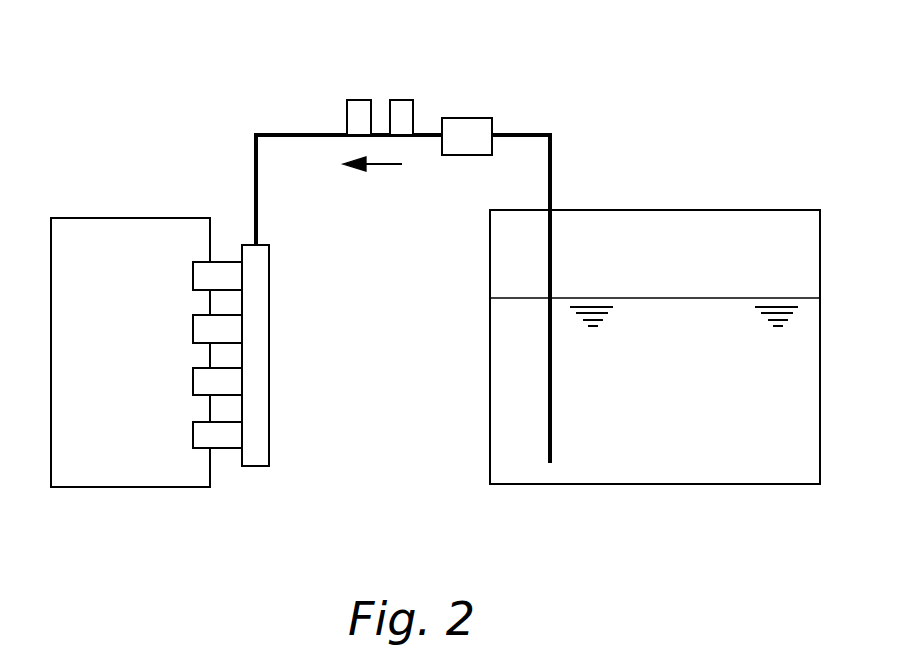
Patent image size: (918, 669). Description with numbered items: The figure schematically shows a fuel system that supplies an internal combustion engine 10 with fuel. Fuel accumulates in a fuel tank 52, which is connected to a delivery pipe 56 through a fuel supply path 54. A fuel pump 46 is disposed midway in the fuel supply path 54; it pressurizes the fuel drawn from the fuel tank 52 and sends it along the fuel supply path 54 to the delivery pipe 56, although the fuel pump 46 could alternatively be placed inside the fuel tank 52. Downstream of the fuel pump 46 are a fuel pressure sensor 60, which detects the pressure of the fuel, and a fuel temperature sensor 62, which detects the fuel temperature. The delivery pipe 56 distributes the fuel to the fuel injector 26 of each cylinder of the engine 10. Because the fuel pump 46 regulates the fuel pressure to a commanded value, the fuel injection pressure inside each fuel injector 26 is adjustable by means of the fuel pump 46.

The internal combustion engine 10 is at (117, 218).
The fuel injector 26 is at (222, 262).
The fuel pump 46 is at (452, 118).
The fuel tank 52 is at (737, 210).
The fuel supply path 54 is at (283, 133).
The delivery pipe 56 is at (270, 346).
The fuel pressure sensor 60 is at (402, 100).
The fuel temperature sensor 62 is at (356, 100).